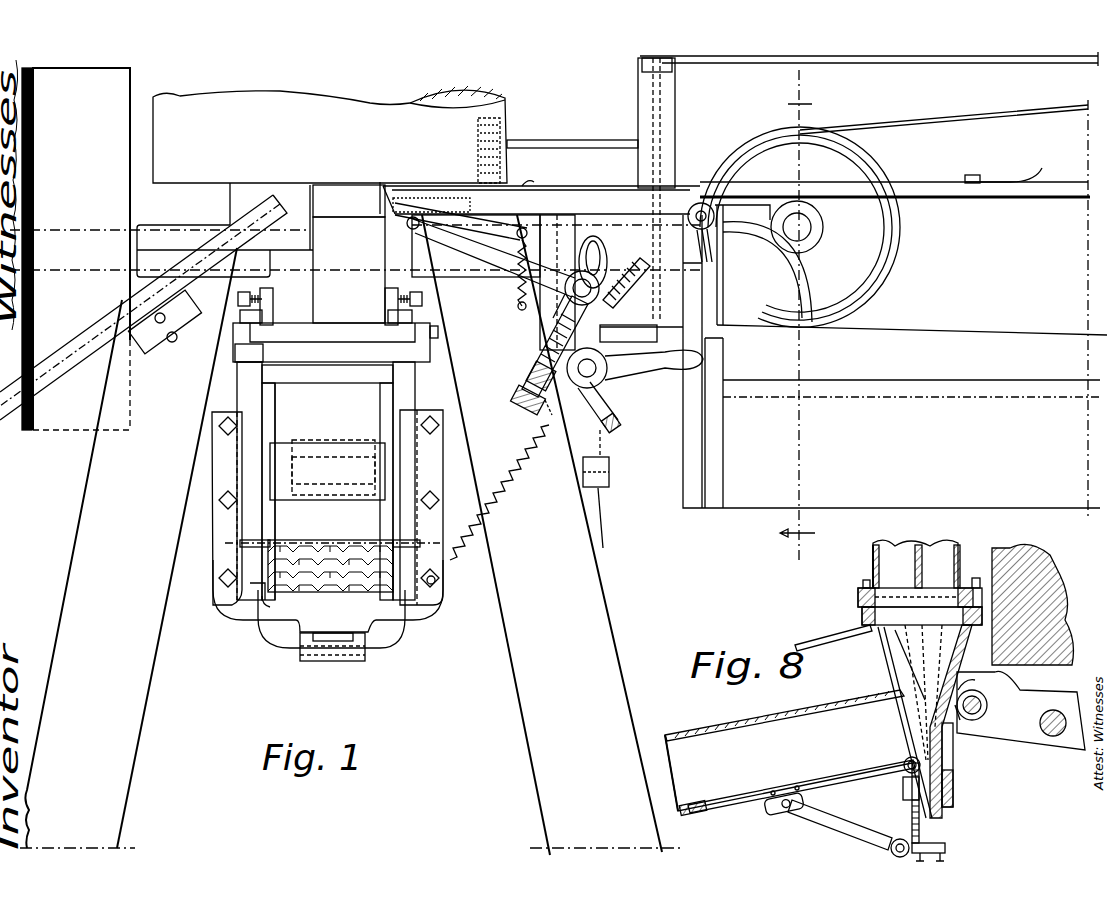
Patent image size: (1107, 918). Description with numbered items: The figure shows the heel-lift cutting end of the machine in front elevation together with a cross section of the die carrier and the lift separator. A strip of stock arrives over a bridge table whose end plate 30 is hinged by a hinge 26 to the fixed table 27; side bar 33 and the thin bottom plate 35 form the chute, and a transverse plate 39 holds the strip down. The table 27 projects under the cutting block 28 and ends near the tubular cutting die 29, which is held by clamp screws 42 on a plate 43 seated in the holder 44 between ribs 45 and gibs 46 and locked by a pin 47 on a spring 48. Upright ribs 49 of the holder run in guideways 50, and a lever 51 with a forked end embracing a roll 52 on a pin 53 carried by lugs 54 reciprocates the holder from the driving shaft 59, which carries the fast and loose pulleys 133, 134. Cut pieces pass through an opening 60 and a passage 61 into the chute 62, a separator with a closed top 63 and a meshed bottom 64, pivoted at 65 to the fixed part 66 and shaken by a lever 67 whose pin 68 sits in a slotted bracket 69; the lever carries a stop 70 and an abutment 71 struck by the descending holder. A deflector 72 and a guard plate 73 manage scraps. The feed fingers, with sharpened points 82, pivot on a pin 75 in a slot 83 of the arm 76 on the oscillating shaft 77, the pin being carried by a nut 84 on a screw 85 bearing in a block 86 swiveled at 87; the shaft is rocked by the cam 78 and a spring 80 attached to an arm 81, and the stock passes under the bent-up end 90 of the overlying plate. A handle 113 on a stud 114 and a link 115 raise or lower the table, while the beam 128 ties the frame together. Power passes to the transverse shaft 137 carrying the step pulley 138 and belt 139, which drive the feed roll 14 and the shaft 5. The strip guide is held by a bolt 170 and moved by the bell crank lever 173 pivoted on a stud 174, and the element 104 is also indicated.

In FIG. 1, the shaft 5 is at (797, 326).
In FIG. 1, the feed roll 14 is at (485, 250).
In FIG. 1, the hinge 26 is at (702, 200).
In FIG. 1, the table 27 is at (530, 200).
In FIG. 1, the cutting block 28 is at (305, 112).
In FIG. 1, the cutting die 29 is at (312, 198).
In FIG. 8, the cutting die 29 is at (873, 560).
In FIG. 1, the solid plate 30 is at (768, 238).
In FIG. 1, the side bar 33 is at (1050, 180).
In FIG. 1, the bottom plate 35 is at (895, 211).
In FIG. 1, the transverse plate 39 is at (1005, 180).
In FIG. 1, the clamp screws 42 is at (272, 294).
In FIG. 1, the plate 43 is at (349, 270).
In FIG. 1, the holder 44 is at (416, 365).
In FIG. 8, the holder 44 is at (990, 635).
In FIG. 1, the ribs 45 is at (240, 348).
In FIG. 1, the gibs 46 is at (240, 325).
In FIG. 1, the pin 47 is at (440, 334).
In FIG. 1, the spring 48 is at (331, 342).
In FIG. 1, the upright ribs 49 is at (245, 394).
In FIG. 8, the upright ribs 49 is at (925, 721).
In FIG. 1, the guideways 50 is at (220, 492).
In FIG. 1, the lever 51 is at (316, 448).
In FIG. 8, the lever 51 is at (1020, 733).
In FIG. 8, the sleeve or roll 52 is at (988, 700).
In FIG. 8, the pin 53 is at (960, 700).
In FIG. 8, the lugs 54 is at (958, 692).
In FIG. 1, the driving shaft 59 is at (81, 249).
In FIG. 8, the opening 60 is at (890, 600).
In FIG. 1, the passage 61 is at (270, 425).
In FIG. 8, the passage 61 is at (895, 633).
In FIG. 1, the chute 62 is at (240, 543).
In FIG. 8, the chute 62 is at (730, 738).
In FIG. 1, the closed top 63 is at (333, 467).
In FIG. 8, the closed top 63 is at (670, 738).
In FIG. 1, the bottom 64 is at (262, 618).
In FIG. 8, the bottom 64 is at (762, 800).
In FIG. 1, the pivot 65 is at (438, 580).
In FIG. 8, the pivot 65 is at (905, 770).
In FIG. 1, the fixed part 66 is at (328, 596).
In FIG. 8, the fixed part 66 is at (955, 803).
In FIG. 1, the lever 67 is at (262, 612).
In FIG. 8, the lever 67 is at (835, 822).
In FIG. 1, the pin 68 is at (292, 592).
In FIG. 8, the pin 68 is at (785, 815).
In FIG. 1, the slotted bracket 69 is at (250, 588).
In FIG. 8, the slotted bracket 69 is at (775, 810).
In FIG. 1, the stop 70 is at (366, 647).
In FIG. 8, the stop 70 is at (908, 838).
In FIG. 8, the abutment 71 is at (948, 846).
In FIG. 1, the deflector 72 is at (145, 298).
In FIG. 1, the guard plate 73 is at (395, 374).
In FIG. 1, the pin 75 is at (552, 322).
In FIG. 8, the pin 75 is at (815, 637).
In FIG. 1, the arm 76 is at (545, 352).
In FIG. 1, the oscillating shaft 77 is at (583, 390).
In FIG. 1, the cam 78 is at (625, 178).
In FIG. 1, the spring 80 is at (478, 545).
In FIG. 1, the arm 81 is at (616, 426).
In FIG. 1, the sharpened points 82 is at (358, 218).
In FIG. 1, the slot 83 is at (569, 282).
In FIG. 1, the nut 84 is at (626, 289).
In FIG. 1, the screw 85 is at (607, 372).
In FIG. 1, the block 86 is at (514, 402).
In FIG. 1, the swivel 87 is at (547, 408).
In FIG. 1, the bent-up end 90 is at (528, 183).
In FIG. 1, the link loop 104 is at (608, 261).
In FIG. 1, the handle 113 is at (615, 518).
In FIG. 1, the stud 114 is at (611, 473).
In FIG. 1, the link 115 is at (583, 470).
In FIG. 1, the beam 128 is at (745, 505).
In FIG. 1, the fast pulley 133 is at (27, 435).
In FIG. 1, the loose pulley 134 is at (70, 428).
In FIG. 1, the transverse shaft 137 is at (812, 228).
In FIG. 1, the step pulley 138 is at (860, 165).
In FIG. 1, the belt 139 is at (940, 120).
In FIG. 1, the bolt 170 is at (478, 141).
In FIG. 1, the bell crank lever 173 is at (530, 138).
In FIG. 1, the stud 174 is at (660, 74).